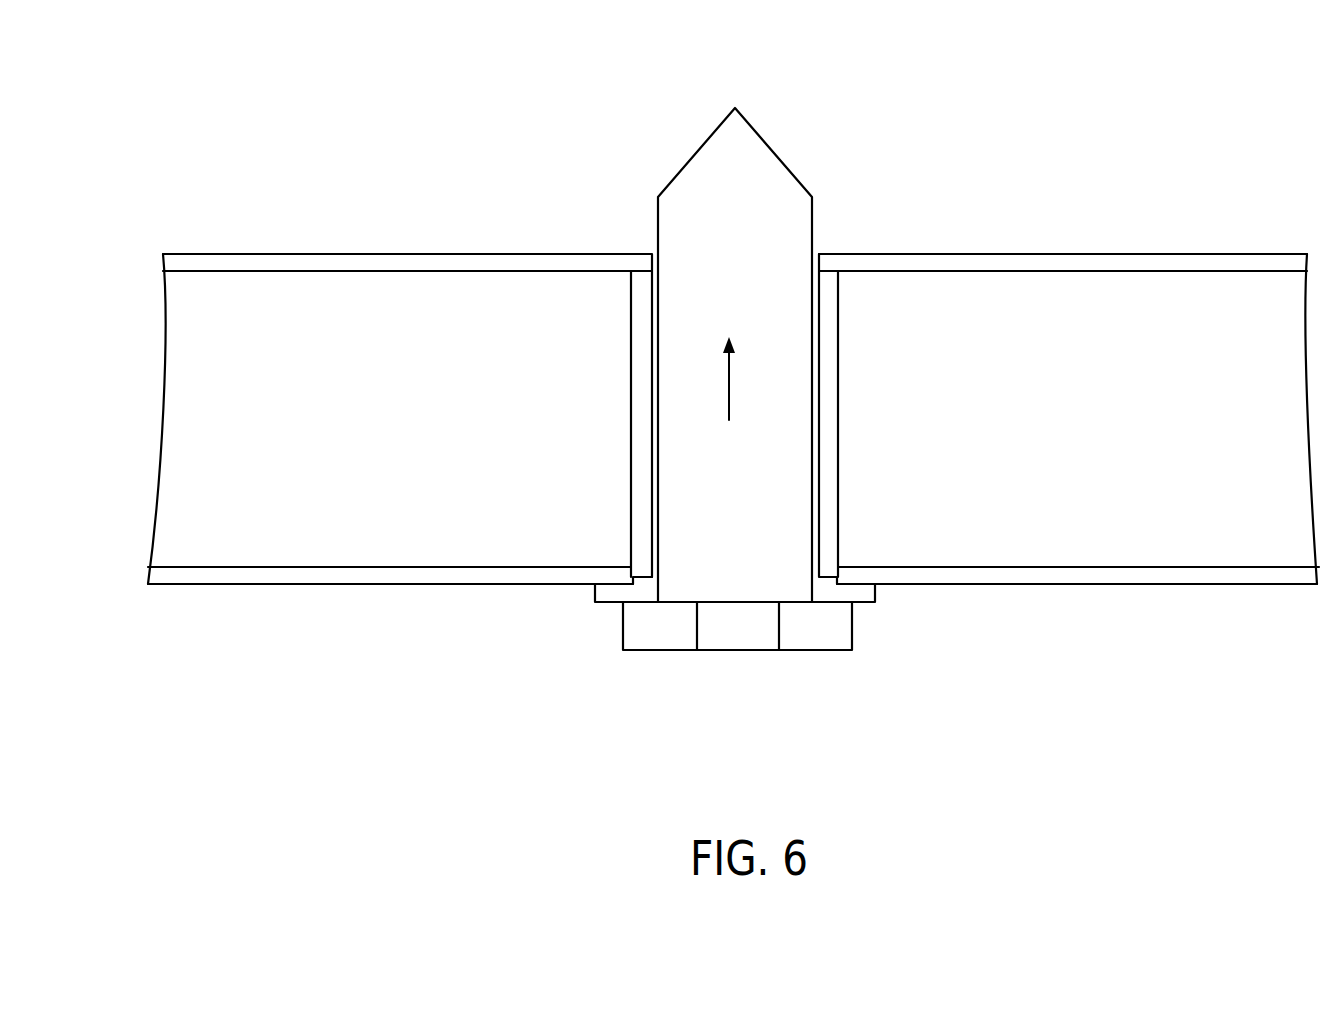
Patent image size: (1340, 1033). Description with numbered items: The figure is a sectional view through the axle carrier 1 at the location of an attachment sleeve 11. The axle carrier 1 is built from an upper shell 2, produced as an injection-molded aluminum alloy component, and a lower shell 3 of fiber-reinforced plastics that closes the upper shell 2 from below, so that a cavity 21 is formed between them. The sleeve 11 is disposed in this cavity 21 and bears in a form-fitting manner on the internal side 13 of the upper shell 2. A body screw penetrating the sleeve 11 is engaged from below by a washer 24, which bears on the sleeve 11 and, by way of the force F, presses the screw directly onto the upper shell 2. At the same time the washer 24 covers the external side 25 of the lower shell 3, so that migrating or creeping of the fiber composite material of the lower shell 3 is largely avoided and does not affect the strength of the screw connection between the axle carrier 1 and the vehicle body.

The axle carrier 1 is at (963, 112).
The upper shell 2 is at (480, 254).
The lower shell 3 is at (270, 585).
The attachment sleeve 11 is at (837, 432).
The internal side of the upper shell 13 is at (865, 286).
The cavity 21 is at (1109, 438).
The washer 24 is at (876, 594).
The external side of the lower shell 25 is at (486, 588).